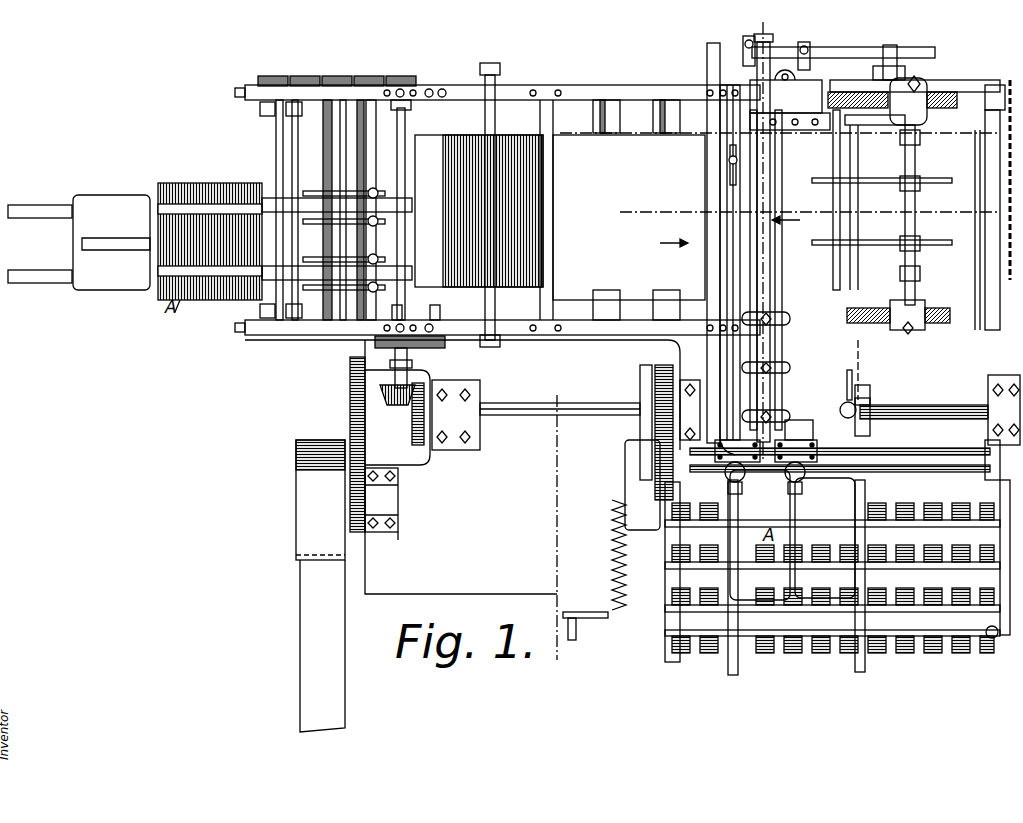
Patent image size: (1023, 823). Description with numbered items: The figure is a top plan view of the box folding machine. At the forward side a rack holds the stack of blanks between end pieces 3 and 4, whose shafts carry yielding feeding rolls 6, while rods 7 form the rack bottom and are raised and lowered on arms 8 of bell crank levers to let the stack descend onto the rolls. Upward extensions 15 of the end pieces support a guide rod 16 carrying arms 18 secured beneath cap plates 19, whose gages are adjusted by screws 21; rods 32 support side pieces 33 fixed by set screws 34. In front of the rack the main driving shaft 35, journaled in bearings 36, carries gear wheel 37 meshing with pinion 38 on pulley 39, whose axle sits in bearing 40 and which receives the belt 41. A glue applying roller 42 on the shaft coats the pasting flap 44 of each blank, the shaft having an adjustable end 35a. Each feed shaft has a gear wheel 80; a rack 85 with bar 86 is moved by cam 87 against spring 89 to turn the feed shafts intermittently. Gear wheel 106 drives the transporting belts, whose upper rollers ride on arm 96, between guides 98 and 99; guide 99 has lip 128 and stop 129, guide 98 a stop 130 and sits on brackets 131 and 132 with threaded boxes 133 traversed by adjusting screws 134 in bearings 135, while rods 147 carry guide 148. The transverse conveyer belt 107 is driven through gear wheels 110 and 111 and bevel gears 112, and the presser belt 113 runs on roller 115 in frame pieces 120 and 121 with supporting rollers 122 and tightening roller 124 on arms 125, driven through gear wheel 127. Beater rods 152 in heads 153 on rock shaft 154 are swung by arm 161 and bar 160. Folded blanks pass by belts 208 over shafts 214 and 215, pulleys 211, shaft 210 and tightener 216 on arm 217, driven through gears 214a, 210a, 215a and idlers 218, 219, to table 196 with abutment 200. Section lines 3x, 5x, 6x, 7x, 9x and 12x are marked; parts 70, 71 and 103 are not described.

The table 196 is at (30, 208).
The outwardly movable abutment 200 is at (111, 242).
The section line 12x is at (418, 230).
The narrow belts 208 is at (337, 238).
The tightener 216 is at (302, 191).
The shaft 215 is at (268, 114).
The intermediate pulleys 211 is at (318, 144).
The shaft 210 is at (295, 162).
The gear wheel 215a is at (272, 78).
The gear wheel 210a is at (300, 78).
The idler gear wheel 219 is at (332, 78).
The idler gear wheel 218 is at (363, 78).
The gear wheel 214a is at (402, 78).
The gear wheel 127 is at (442, 87).
The shaft 214 is at (402, 150).
The roller 124 is at (497, 115).
The vertically adjustable arms 125 is at (498, 78).
The outer frame piece 121 is at (632, 90).
The intermediate supporting rollers 122 is at (614, 298).
The guide 99 is at (720, 152).
The lip or shoulder 128 is at (718, 269).
The vertically movable bar 160 is at (722, 75).
The longitudinally adjustable stop 129 is at (730, 180).
The section line 6x is at (782, 136).
The section line 7x is at (1000, 203).
The presser belt 113 is at (650, 237).
The stop 130 is at (808, 167).
The beater rods 152 is at (806, 198).
The conveyer belt 107 is at (806, 242).
The guide 98 is at (835, 264).
The heads 153 is at (747, 50).
The section line 3x is at (770, 668).
The arm 161 is at (804, 54).
The threaded box 133 is at (800, 346).
The rock shaft 154 is at (842, 47).
The adjusting screws 134 is at (866, 90).
The bracket 131 is at (873, 320).
The bracket 132 is at (873, 128).
The guide 148 is at (855, 195).
The rods 147 is at (870, 276).
The part 103 is at (962, 256).
The bearings 135 is at (990, 85).
The section line 5x is at (878, 682).
The arm 96 is at (768, 384).
The glue applying roller 42 is at (853, 384).
The pivot 70 is at (870, 400).
The longitudinally adjustable end 35a is at (932, 405).
The bracket 71 is at (868, 418).
The bearings 36 is at (726, 412).
The extensions 15 is at (996, 454).
The guide rod 16 is at (956, 456).
The arms 18 is at (799, 429).
The cap plates 19 is at (766, 451).
The screws 21 is at (748, 488).
The pasting flap 44 is at (852, 514).
The side pieces 33 is at (733, 676).
The gear wheel 80 is at (665, 656).
The end piece 3 is at (680, 666).
The rods 32 is at (700, 640).
The rods 7 is at (820, 650).
The feeding rolls 6 is at (940, 656).
The arms 8 is at (975, 656).
The end piece 4 is at (995, 650).
The set screws 34 is at (996, 636).
The gear wheel 106 is at (655, 376).
The cam 87 is at (640, 388).
The main driving shaft 35 is at (582, 416).
The bar 86 is at (630, 470).
The rack 85 is at (610, 536).
The spring 89 is at (610, 560).
The section line 9x is at (567, 514).
The inner frame piece 120 is at (634, 344).
The gear wheel 111 is at (375, 345).
The gear wheel 110 is at (412, 355).
The roller 115 is at (440, 324).
The bevel gear wheels 112 is at (397, 410).
The gear wheel 37 is at (350, 380).
The bearing 40 is at (390, 500).
The pinion 38 is at (360, 530).
The pulley 39 is at (297, 490).
The belt or driving connection 41 is at (322, 646).
The adjustable arm 217 is at (262, 292).